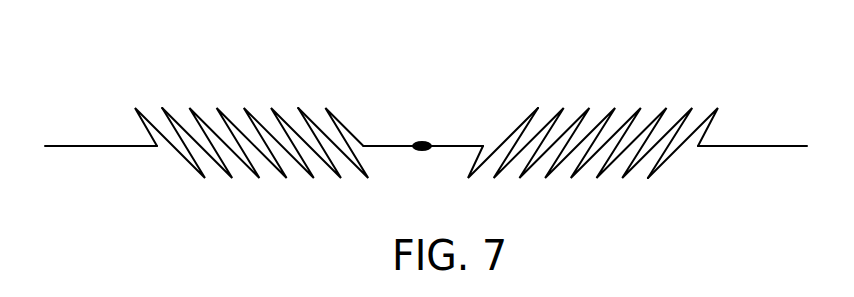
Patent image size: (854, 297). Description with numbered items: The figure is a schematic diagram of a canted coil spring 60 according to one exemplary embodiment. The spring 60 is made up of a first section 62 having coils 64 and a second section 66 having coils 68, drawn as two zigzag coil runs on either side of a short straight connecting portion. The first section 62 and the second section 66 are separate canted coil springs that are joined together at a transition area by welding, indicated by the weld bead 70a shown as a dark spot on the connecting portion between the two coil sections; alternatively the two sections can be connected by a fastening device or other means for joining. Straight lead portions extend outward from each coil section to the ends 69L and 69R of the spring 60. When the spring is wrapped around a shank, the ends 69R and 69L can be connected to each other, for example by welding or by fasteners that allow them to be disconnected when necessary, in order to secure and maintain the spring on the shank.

The spring 60 is at (411, 86).
The first section 62 is at (593, 95).
The coils 64 is at (550, 116).
The second section 66 is at (251, 96).
The coils 68 is at (195, 118).
The end 69L is at (56, 153).
The end 69R is at (786, 153).
The weld bead 70a is at (442, 127).